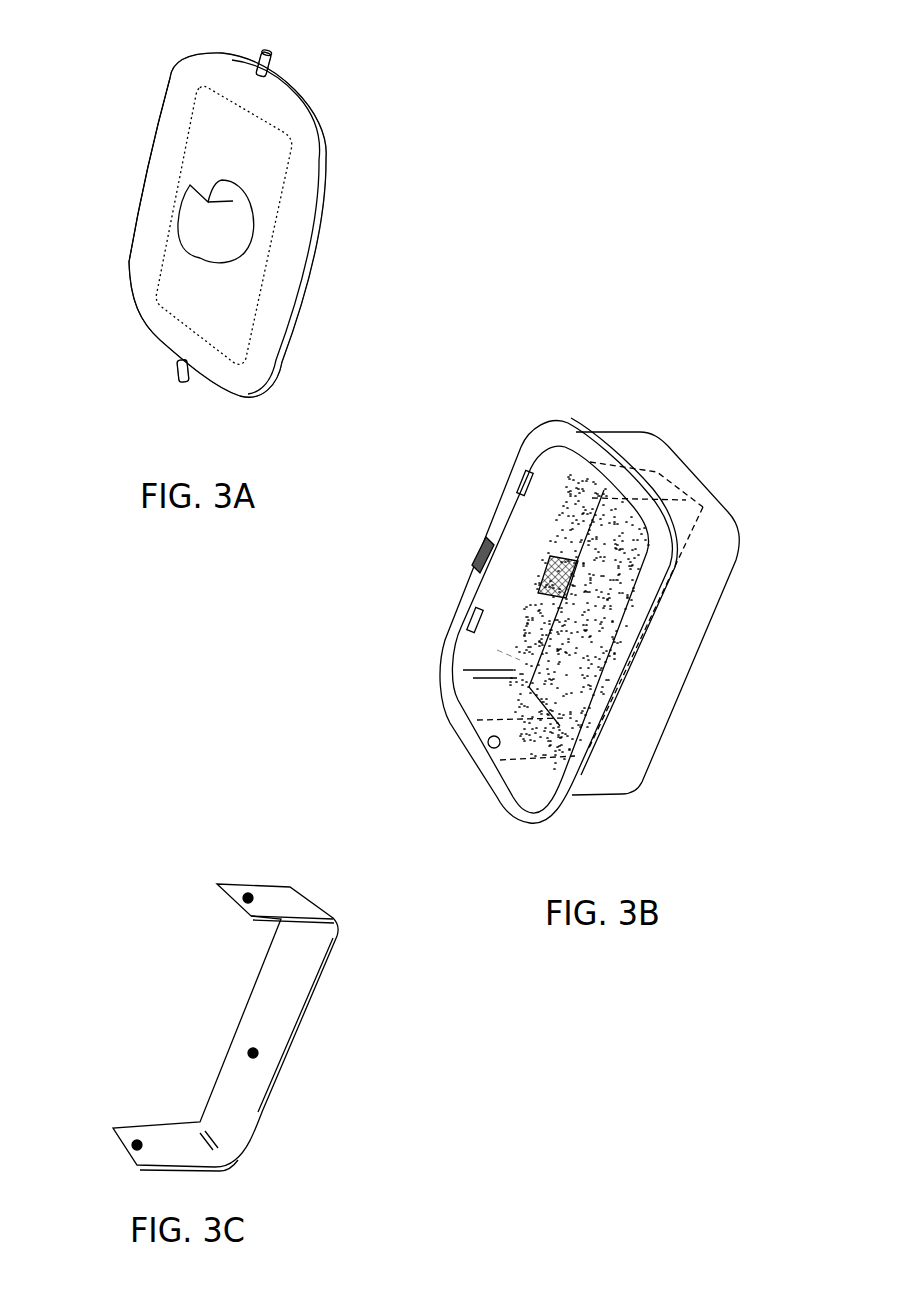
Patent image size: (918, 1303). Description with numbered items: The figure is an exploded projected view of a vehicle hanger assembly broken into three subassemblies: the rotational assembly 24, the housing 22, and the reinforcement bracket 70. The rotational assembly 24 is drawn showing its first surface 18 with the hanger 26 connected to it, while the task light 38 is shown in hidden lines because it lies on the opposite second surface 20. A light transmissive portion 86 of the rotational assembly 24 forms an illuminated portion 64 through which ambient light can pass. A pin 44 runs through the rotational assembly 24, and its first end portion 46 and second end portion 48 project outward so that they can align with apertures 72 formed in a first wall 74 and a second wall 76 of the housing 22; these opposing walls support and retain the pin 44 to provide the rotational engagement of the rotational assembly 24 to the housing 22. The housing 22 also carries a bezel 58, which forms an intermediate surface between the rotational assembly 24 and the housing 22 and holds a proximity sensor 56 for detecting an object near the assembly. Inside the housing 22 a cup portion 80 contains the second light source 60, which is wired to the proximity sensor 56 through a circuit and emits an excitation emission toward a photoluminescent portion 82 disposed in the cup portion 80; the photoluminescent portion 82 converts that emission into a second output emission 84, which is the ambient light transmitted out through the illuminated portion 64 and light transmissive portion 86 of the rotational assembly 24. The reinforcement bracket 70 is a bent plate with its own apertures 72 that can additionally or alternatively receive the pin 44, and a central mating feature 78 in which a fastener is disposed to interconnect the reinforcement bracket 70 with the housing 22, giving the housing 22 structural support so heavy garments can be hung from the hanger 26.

In FIG. 3A, the first surface 18 is at (243, 378).
In FIG. 3A, the second surface 20 is at (309, 251).
In FIG. 3B, the housing 22 is at (721, 441).
In FIG. 3A, the rotational assembly 24 is at (377, 124).
In FIG. 3A, the hanger 26 is at (197, 222).
In FIG. 3A, the task light 38 is at (286, 213).
In FIG. 3A, the pin 44 is at (258, 33).
In FIG. 3A, the first end portion 46 is at (177, 367).
In FIG. 3A, the second end portion 48 is at (290, 61).
In FIG. 3B, the proximity sensor 56 is at (475, 559).
In FIG. 3B, the bezel 58 is at (495, 525).
In FIG. 3B, the second light source 60 is at (585, 577).
In FIG. 3A, the illuminated portion 64 is at (174, 135).
In FIG. 3C, the reinforcement bracket 70 is at (335, 968).
In FIG. 3B, the apertures 72 is at (630, 456).
In FIG. 3C, the apertures 72 is at (249, 892).
In FIG. 3B, the first wall 74 is at (505, 703).
In FIG. 3B, the second wall 76 is at (620, 447).
In FIG. 3B, the central mating feature 78 is at (497, 650).
In FIG. 3C, the central mating feature 78 is at (255, 1058).
In FIG. 3B, the cup portion 80 is at (509, 586).
In FIG. 3B, the photoluminescent portion 82 is at (549, 539).
In FIG. 3B, the second output emission 84 is at (545, 535).
In FIG. 3A, the light transmissive portion 86 is at (275, 302).